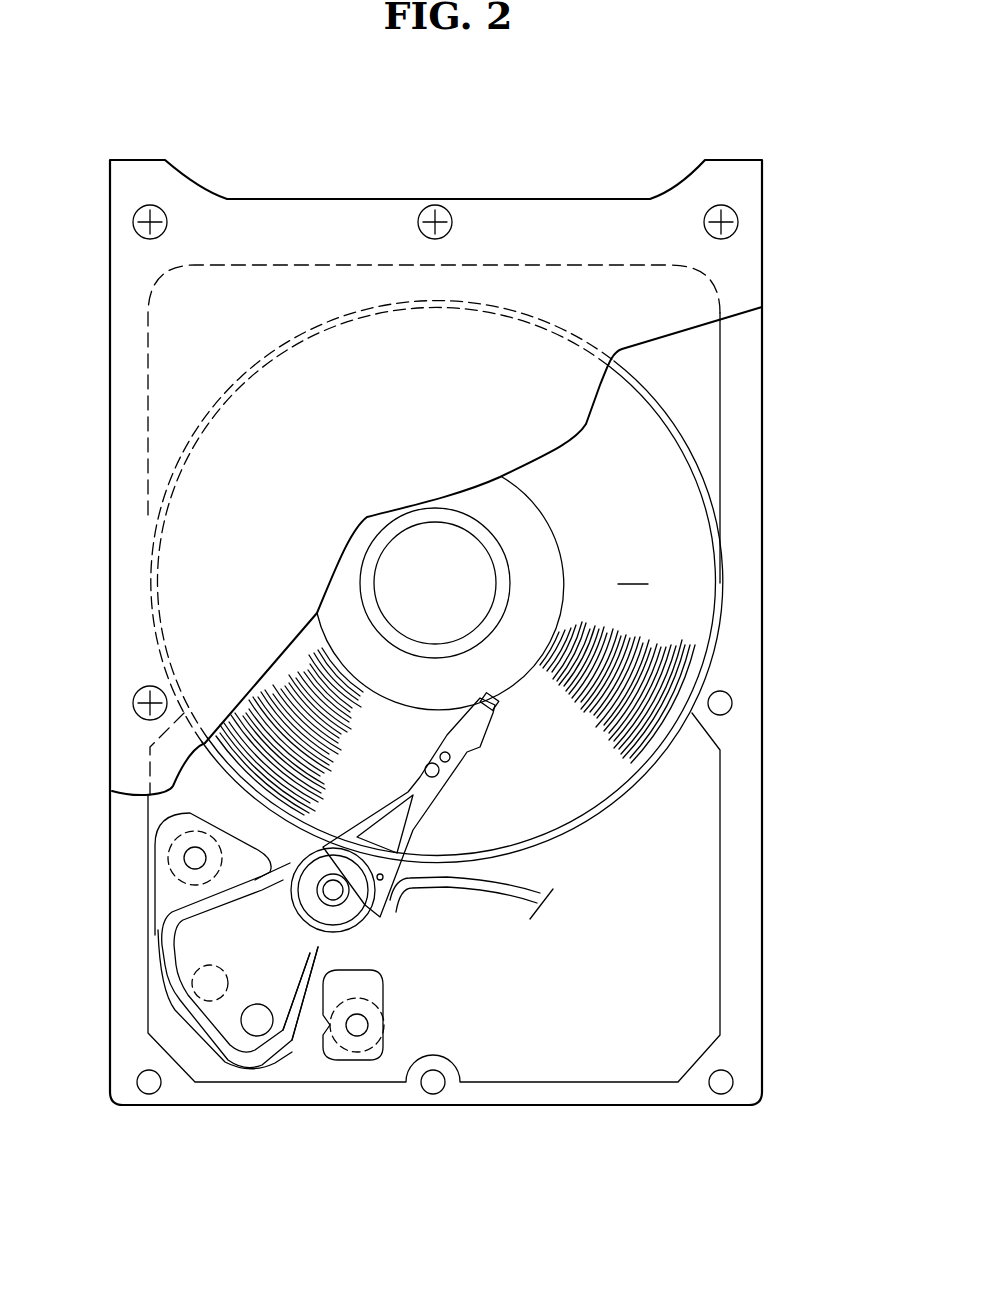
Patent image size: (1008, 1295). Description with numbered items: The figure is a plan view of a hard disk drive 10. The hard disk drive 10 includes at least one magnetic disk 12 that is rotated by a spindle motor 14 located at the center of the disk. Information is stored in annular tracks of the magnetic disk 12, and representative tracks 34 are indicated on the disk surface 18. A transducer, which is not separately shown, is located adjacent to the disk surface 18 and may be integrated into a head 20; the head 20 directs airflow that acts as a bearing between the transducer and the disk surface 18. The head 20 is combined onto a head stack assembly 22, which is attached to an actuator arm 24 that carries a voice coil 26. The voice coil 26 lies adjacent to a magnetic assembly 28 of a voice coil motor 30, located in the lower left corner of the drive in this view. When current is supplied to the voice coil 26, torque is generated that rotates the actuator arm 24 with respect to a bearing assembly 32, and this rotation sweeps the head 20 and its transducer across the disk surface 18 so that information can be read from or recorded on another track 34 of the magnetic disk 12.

The hard disk drive 10 is at (816, 172).
The magnetic disk 12 is at (677, 522).
The spindle motor 14 is at (411, 560).
The disk surface 18 is at (631, 570).
The head 20 is at (484, 721).
The head stack assembly 22 is at (436, 798).
The actuator arm 24 is at (263, 880).
The voice coil 26 is at (190, 977).
The magnetic assembly 28 is at (190, 920).
The voice coil motor 30 is at (292, 1047).
The bearing assembly 32 is at (345, 903).
The track 34 is at (298, 697).